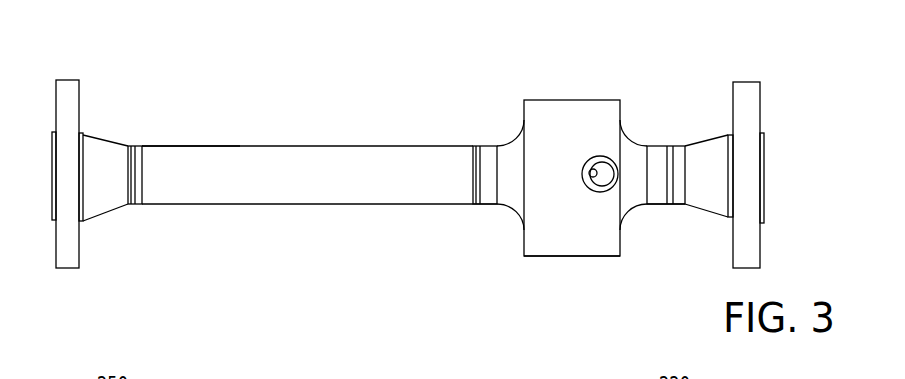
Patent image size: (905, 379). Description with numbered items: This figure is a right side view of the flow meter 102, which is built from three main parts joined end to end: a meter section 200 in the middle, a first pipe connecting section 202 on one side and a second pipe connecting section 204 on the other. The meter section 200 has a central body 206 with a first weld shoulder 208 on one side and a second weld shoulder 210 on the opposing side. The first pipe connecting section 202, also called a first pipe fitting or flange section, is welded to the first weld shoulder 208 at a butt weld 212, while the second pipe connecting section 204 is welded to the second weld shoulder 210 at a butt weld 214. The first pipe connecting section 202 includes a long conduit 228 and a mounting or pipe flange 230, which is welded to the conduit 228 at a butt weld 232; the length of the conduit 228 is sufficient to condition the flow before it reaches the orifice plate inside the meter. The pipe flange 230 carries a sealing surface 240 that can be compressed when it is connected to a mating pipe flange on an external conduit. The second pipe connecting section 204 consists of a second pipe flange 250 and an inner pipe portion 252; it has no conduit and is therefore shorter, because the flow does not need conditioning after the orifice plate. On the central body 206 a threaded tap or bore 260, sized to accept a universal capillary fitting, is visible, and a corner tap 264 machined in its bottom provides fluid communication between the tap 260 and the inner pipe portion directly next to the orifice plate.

The flow meter 102 is at (393, 70).
The meter section 200 is at (568, 81).
The first pipe connecting section 202 is at (318, 142).
The second pipe connecting section 204 is at (698, 118).
The central body 206 is at (524, 257).
The first weld shoulder 208 is at (475, 145).
The second weld shoulder 210 is at (648, 146).
The butt weld 212 is at (476, 206).
The butt weld 214 is at (672, 205).
The conduit 228 is at (193, 146).
The pipe flange 230 is at (77, 80).
The butt weld 232 is at (138, 206).
The sealing surface 240 is at (52, 165).
The second pipe flange 250 is at (735, 82).
The inner pipe portion 252 is at (764, 165).
The threaded tap 260 is at (608, 182).
The corner tap 264 is at (592, 177).